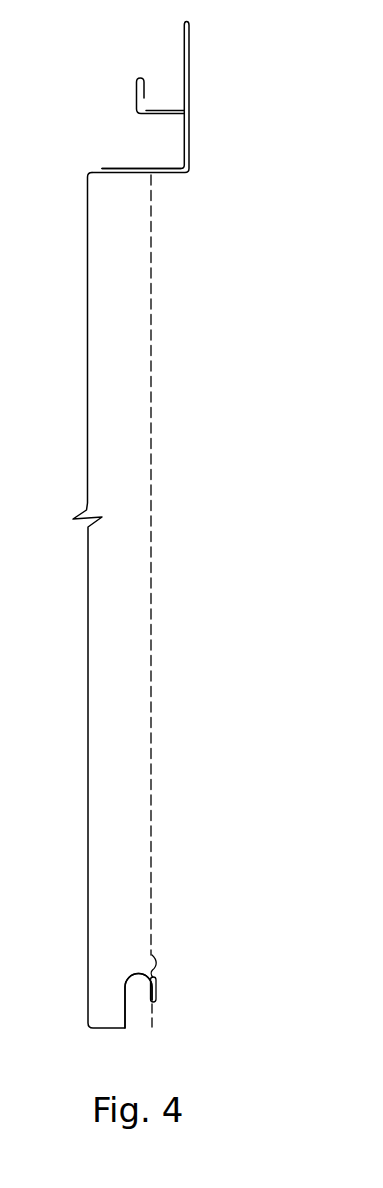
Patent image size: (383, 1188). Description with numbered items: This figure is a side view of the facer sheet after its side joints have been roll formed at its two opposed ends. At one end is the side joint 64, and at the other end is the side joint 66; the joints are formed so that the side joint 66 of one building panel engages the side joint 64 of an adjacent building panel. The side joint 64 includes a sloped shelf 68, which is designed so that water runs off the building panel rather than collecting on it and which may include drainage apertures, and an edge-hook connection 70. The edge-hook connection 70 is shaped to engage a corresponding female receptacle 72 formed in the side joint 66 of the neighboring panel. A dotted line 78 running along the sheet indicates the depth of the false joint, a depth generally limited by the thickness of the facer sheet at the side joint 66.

The side joint 64 is at (212, 77).
The side joint 66 is at (168, 1019).
The sloped shelf 68 is at (134, 167).
The edge-hook connection 70 is at (115, 81).
The female receptacle 72 is at (140, 1012).
The dotted line 78 is at (151, 382).